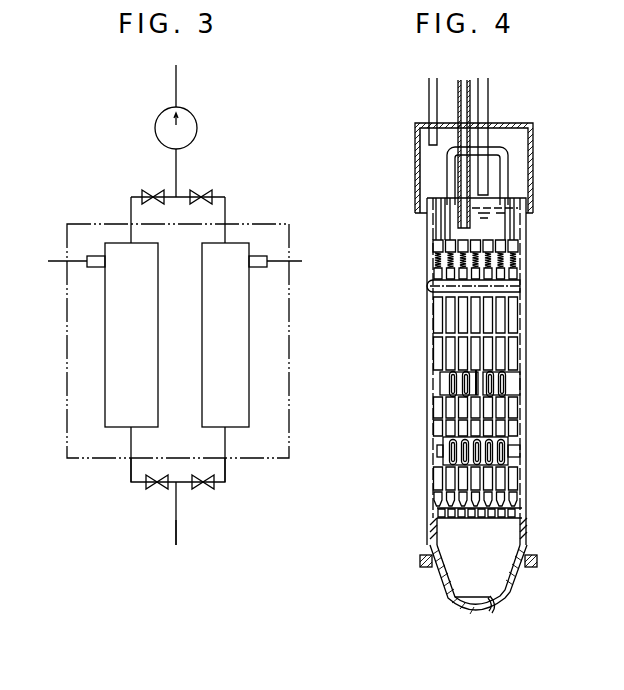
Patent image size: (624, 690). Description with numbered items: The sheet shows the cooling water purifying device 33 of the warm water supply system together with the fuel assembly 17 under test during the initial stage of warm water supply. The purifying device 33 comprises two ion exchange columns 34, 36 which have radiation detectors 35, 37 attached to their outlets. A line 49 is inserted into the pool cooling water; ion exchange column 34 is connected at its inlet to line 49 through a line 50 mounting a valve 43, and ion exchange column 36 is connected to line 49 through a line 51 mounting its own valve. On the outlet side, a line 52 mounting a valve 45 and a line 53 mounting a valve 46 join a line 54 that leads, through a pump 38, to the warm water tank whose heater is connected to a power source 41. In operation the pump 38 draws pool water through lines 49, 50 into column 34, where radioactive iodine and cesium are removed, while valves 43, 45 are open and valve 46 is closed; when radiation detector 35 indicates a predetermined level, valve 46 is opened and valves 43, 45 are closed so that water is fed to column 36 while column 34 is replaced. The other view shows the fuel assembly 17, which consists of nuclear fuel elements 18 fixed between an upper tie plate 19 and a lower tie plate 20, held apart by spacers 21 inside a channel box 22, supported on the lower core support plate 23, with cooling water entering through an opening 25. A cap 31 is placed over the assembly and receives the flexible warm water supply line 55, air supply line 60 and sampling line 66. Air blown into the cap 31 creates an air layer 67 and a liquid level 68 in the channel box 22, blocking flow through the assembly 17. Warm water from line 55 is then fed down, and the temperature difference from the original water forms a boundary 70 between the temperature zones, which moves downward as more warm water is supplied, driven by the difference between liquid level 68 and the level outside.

In FIG. 4, the fuel assembly 17 is at (527, 392).
In FIG. 4, the nuclear fuel element 18 is at (437, 318).
In FIG. 4, the upper tie plate 19 is at (433, 245).
In FIG. 4, the lower tie plate 20 is at (452, 598).
In FIG. 4, the spacer 21 is at (440, 385).
In FIG. 4, the channel box 22 is at (522, 470).
In FIG. 4, the lower core support plate 23 is at (530, 568).
In FIG. 4, the opening 25 is at (490, 607).
In FIG. 4, the cap 31 is at (416, 150).
In FIG. 3, the cooling water purifying device 33 is at (289, 368).
In FIG. 3, the ion exchange column 34 is at (105, 326).
In FIG. 3, the radiation detector 35 is at (88, 256).
In FIG. 3, the ion exchange column 36 is at (250, 328).
In FIG. 3, the radiation detector 37 is at (262, 254).
In FIG. 3, the pump 38 is at (197, 132).
In FIG. 3, the power source 41 is at (198, 490).
In FIG. 3, the valve 43 is at (157, 490).
In FIG. 3, the valve 45 is at (143, 193).
In FIG. 3, the valve 46 is at (207, 193).
In FIG. 3, the line 49 is at (178, 530).
In FIG. 3, the line 50 is at (131, 470).
In FIG. 3, the line 51 is at (225, 470).
In FIG. 3, the line 52 is at (131, 205).
In FIG. 3, the line 53 is at (225, 205).
In FIG. 3, the line 54 is at (178, 90).
In FIG. 4, the warm water supply line 55 is at (490, 108).
In FIG. 4, the air supply line 60 is at (428, 98).
In FIG. 4, the sampling line 66 is at (490, 92).
In FIG. 4, the air layer 67 is at (525, 148).
In FIG. 4, the liquid level 68 is at (487, 200).
In FIG. 4, the boundary 70 is at (520, 283).